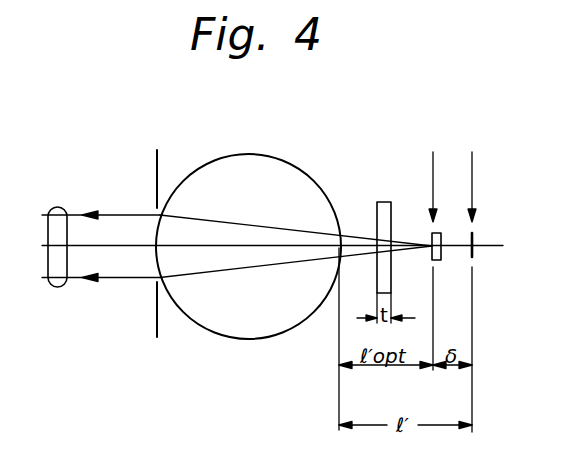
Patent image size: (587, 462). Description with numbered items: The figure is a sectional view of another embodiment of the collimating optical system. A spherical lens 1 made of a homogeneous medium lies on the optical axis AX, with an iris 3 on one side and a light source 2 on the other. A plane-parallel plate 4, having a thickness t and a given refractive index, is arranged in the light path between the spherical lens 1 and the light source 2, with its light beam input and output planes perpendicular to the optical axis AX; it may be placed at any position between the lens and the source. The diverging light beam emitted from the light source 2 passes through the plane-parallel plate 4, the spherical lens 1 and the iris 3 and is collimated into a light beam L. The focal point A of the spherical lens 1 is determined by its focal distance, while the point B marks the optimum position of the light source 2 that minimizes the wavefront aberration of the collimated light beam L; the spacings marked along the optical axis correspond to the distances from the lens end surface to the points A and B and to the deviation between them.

The spherical lens 1 is at (311, 188).
The light source 2 is at (441, 256).
The iris 3 is at (157, 165).
The plane-parallel plate 4 is at (384, 207).
The collimated light beam L is at (57, 207).
The optical axis AX is at (120, 247).
The focal point A is at (471, 278).
The optimum position of the light source B is at (432, 247).